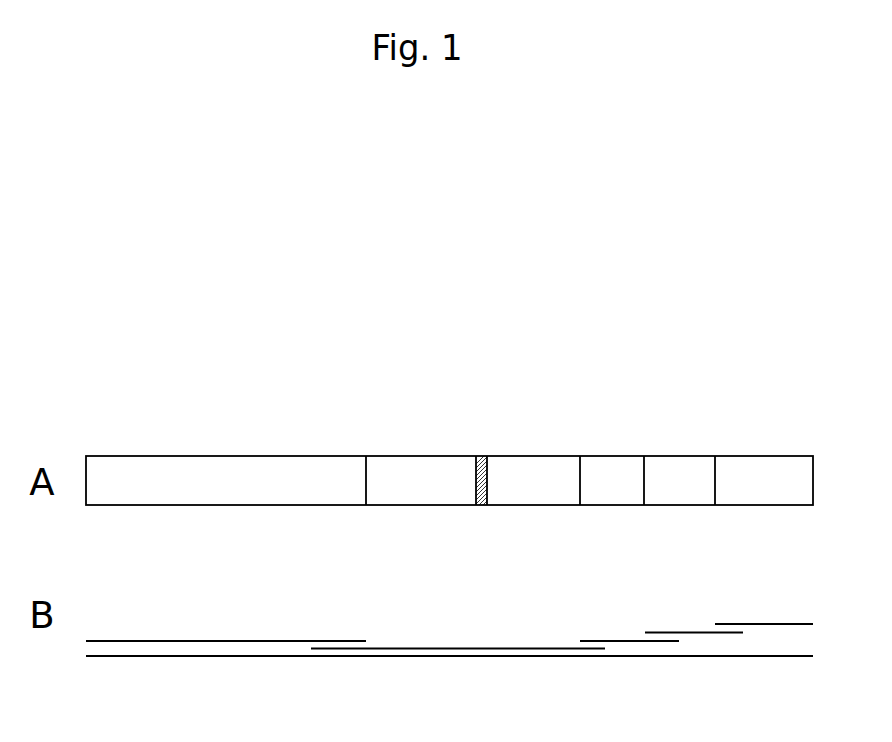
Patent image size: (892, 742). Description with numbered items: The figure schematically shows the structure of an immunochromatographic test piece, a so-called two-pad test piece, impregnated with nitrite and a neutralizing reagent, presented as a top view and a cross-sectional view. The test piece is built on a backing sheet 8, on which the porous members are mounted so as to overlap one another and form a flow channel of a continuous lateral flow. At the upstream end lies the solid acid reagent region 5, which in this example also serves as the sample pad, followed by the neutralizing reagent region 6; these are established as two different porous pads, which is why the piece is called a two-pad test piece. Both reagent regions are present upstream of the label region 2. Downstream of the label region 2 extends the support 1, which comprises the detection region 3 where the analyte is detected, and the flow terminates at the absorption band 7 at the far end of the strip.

The support 1 is at (423, 505).
The label region 2 is at (614, 505).
The detection region 3 is at (484, 505).
The solid acid reagent region 5 is at (764, 505).
The neutralizing reagent region 6 is at (681, 505).
The absorption band 7 is at (225, 505).
The backing sheet 8 is at (746, 657).